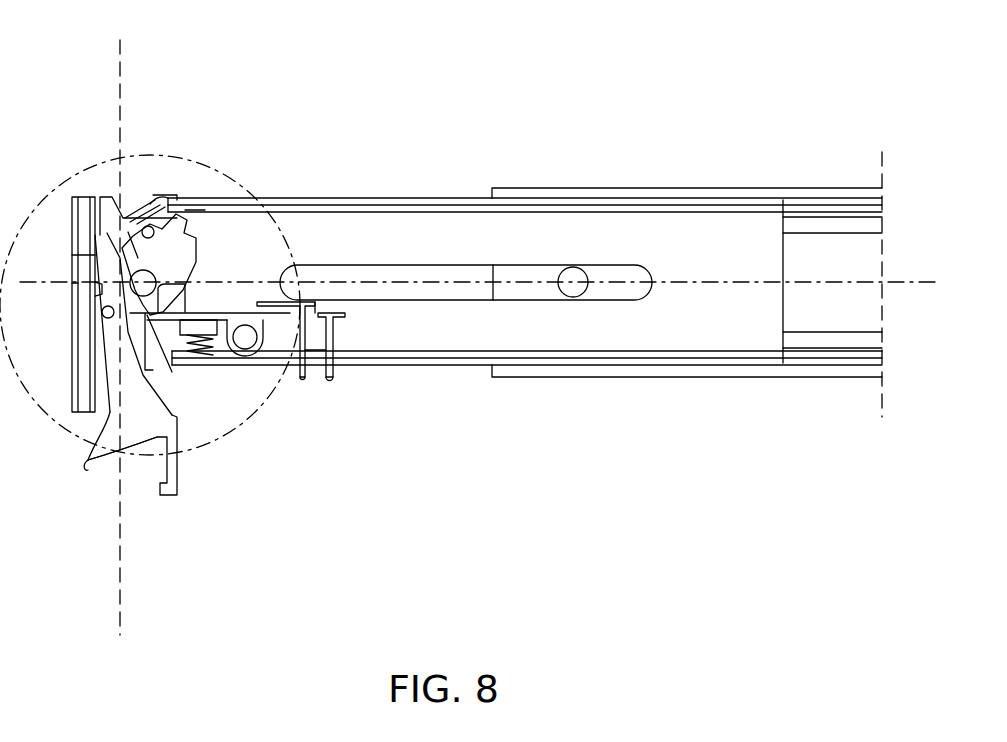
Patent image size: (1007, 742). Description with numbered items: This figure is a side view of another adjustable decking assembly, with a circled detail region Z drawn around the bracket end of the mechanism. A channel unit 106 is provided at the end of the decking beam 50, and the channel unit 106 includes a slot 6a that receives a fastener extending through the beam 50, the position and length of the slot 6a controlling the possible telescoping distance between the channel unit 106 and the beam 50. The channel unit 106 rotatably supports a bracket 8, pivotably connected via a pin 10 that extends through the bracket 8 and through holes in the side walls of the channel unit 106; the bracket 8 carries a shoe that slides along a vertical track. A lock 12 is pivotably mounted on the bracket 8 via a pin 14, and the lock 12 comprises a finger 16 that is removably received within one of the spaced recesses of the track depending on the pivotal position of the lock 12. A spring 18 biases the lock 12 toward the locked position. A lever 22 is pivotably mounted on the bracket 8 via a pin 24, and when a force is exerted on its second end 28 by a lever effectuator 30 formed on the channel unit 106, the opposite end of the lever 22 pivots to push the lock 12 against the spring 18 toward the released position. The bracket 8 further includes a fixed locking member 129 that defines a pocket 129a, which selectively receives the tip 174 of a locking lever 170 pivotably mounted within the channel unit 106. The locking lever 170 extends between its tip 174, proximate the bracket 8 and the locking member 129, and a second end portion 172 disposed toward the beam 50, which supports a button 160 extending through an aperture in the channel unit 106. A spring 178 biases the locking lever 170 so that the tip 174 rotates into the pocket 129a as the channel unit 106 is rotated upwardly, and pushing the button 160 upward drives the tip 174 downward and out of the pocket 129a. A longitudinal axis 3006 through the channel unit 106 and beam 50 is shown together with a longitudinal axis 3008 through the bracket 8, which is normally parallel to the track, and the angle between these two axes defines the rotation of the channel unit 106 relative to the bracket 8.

The detail region Z is at (42, 193).
The bracket 8 is at (96, 195).
The lever 22 is at (140, 200).
The lever effectuator 30 is at (163, 195).
The pin 24 is at (168, 203).
The second end 28 is at (205, 200).
The channel unit 106 is at (424, 197).
The beam 50 is at (830, 187).
The spring 18 is at (78, 267).
The locking member 129 is at (192, 268).
The pocket 129a is at (195, 286).
The tip 174 is at (301, 300).
The second end portion 172 is at (338, 310).
The longitudinal axis 3006 is at (72, 283).
The pin 14 is at (80, 340).
The pin 10 is at (173, 358).
The spring 178 is at (197, 362).
The lock 12 is at (173, 417).
The locking lever 170 is at (262, 333).
The button 160 is at (328, 330).
The slot 6a is at (437, 292).
The finger 16 is at (88, 462).
The longitudinal axis 3008 is at (125, 600).